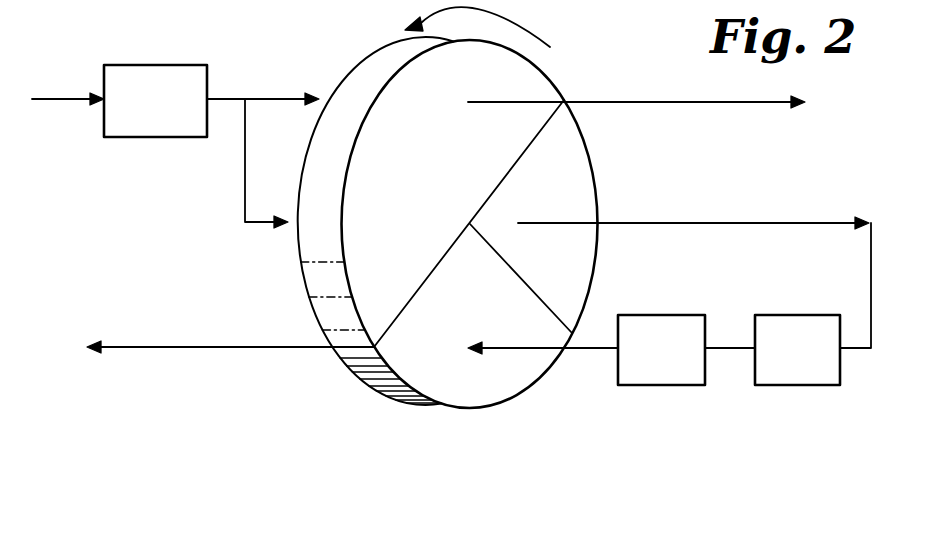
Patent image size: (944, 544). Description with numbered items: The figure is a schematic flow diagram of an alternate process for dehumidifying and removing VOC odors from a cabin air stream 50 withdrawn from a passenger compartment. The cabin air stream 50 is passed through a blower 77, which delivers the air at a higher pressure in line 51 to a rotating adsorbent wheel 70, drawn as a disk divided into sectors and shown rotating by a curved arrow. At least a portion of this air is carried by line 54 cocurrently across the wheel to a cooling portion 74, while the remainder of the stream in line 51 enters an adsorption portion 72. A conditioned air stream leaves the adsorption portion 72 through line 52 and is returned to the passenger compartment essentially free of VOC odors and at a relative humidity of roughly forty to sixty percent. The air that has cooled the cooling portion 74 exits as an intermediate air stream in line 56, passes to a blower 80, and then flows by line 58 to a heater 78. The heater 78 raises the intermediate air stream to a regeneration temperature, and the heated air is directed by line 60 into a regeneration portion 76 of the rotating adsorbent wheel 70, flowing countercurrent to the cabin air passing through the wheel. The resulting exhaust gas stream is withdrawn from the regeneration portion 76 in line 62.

The cabin air stream 50 is at (67, 100).
The line 51 is at (277, 76).
The line 52 is at (661, 102).
The line 54 is at (259, 223).
The line 56 is at (722, 222).
The line 58 is at (732, 350).
The line 60 is at (601, 350).
The line 62 is at (180, 348).
The rotating adsorbent wheel 70 is at (551, 66).
The adsorption portion 72 is at (533, 90).
The cooling portion 74 is at (574, 163).
The regeneration portion 76 is at (505, 381).
The blower 77 is at (128, 65).
The heater 78 is at (686, 314).
The blower 80 is at (814, 314).